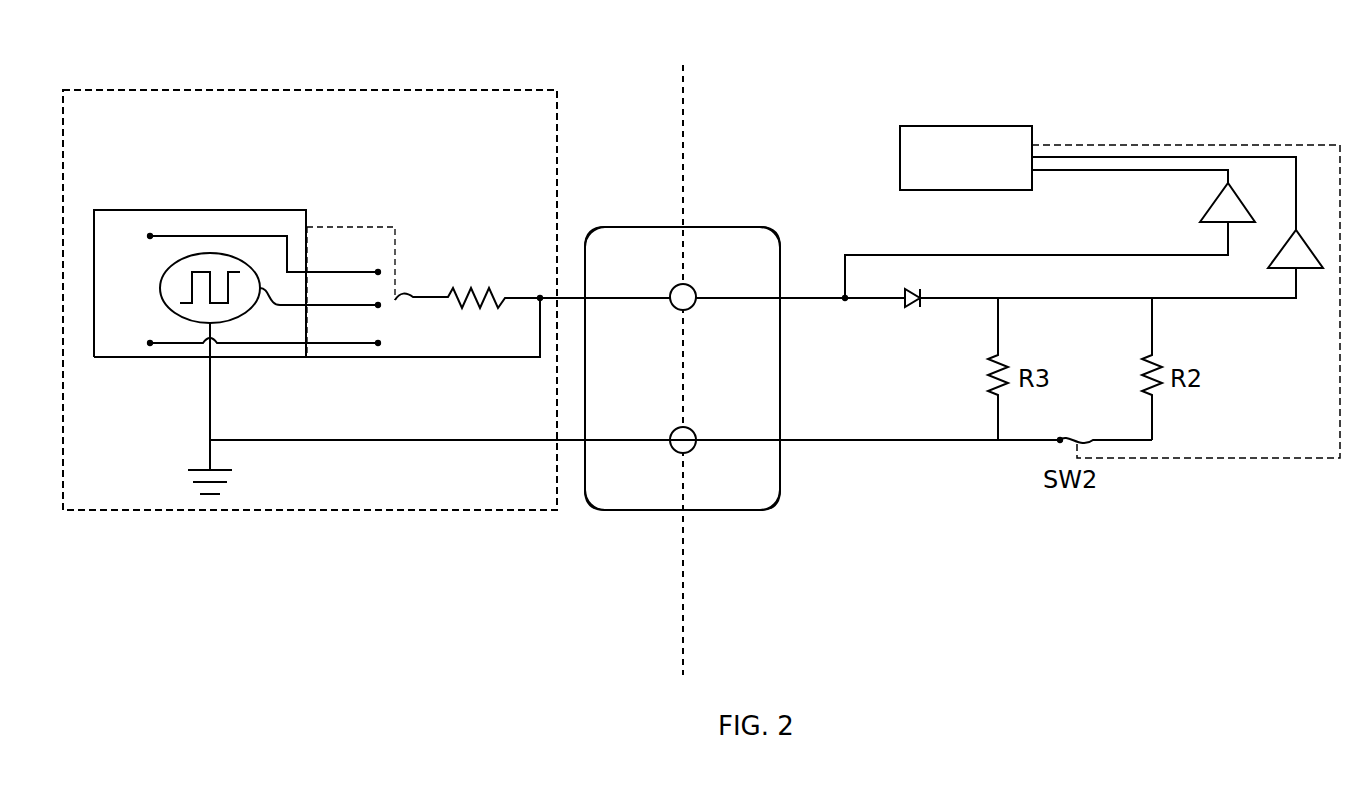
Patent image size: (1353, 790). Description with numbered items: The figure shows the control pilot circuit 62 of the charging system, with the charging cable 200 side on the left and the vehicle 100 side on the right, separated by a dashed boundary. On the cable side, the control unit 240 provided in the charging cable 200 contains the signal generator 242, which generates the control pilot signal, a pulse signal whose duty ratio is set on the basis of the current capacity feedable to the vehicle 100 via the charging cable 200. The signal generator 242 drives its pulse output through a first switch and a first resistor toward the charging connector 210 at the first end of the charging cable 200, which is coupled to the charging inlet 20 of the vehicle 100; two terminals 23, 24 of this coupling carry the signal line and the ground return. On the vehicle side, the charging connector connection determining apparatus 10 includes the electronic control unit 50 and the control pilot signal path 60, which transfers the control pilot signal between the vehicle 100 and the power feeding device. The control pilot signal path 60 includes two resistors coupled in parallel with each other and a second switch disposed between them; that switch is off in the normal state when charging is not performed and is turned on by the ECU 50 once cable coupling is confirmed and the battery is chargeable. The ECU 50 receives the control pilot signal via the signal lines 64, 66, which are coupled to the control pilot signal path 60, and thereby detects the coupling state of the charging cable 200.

The charging connector connection determining apparatus 10 is at (752, 178).
The charging inlet 20 is at (755, 512).
The first terminal 23 is at (693, 430).
The second terminal 24 is at (693, 288).
The electronic control unit (ECU) 50 is at (983, 125).
The control pilot signal path 60 is at (938, 442).
The control pilot circuit 62 is at (608, 297).
The signal line 64 is at (1075, 255).
The signal line 66 is at (1256, 300).
The vehicle 100 is at (752, 638).
The charging cable 200 is at (652, 638).
The charging connector 210 is at (600, 512).
The control unit 240 is at (234, 90).
The signal generator 242 is at (268, 210).